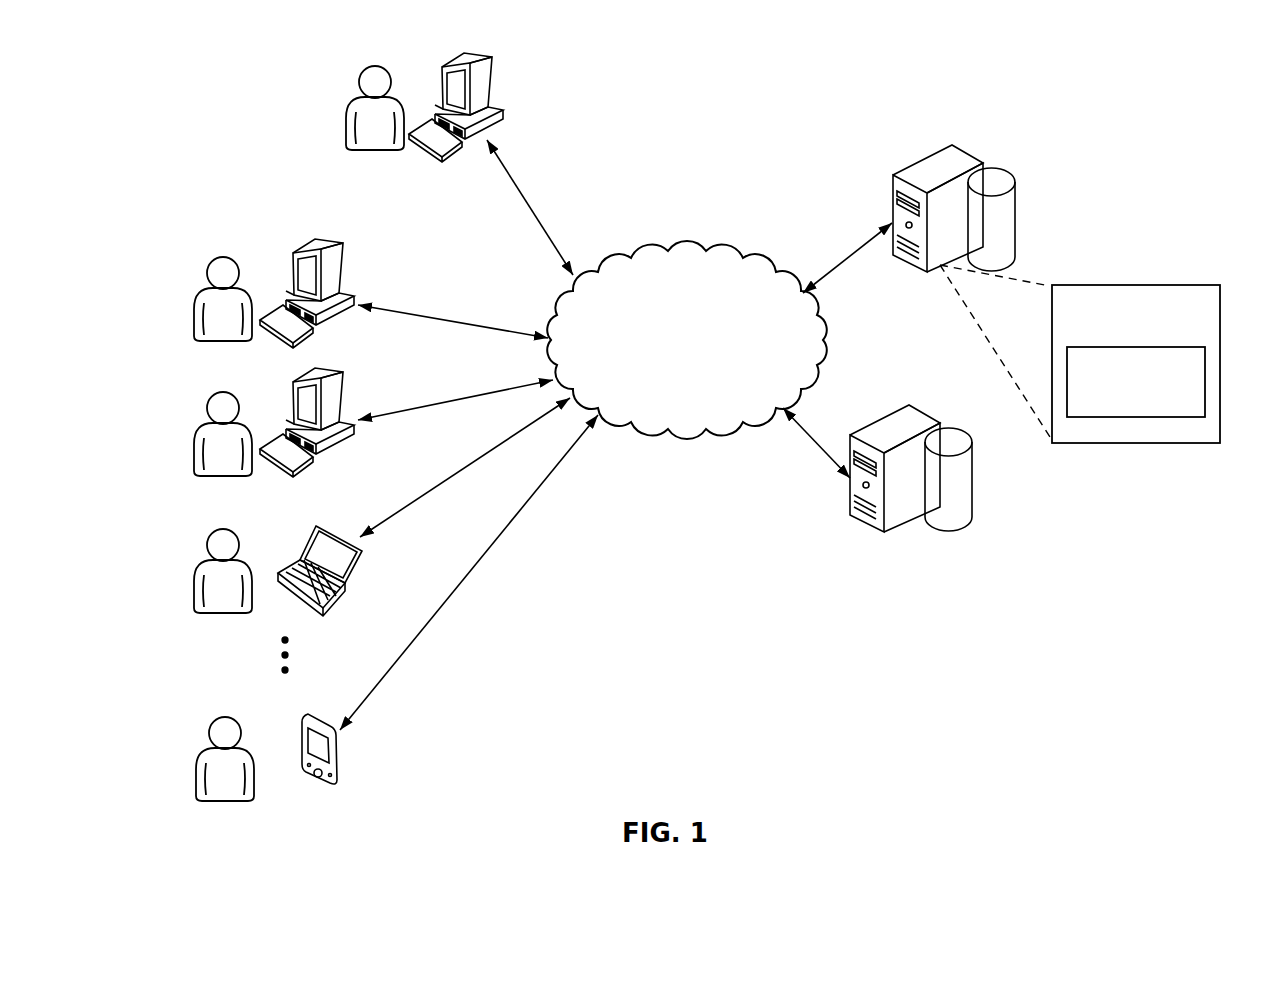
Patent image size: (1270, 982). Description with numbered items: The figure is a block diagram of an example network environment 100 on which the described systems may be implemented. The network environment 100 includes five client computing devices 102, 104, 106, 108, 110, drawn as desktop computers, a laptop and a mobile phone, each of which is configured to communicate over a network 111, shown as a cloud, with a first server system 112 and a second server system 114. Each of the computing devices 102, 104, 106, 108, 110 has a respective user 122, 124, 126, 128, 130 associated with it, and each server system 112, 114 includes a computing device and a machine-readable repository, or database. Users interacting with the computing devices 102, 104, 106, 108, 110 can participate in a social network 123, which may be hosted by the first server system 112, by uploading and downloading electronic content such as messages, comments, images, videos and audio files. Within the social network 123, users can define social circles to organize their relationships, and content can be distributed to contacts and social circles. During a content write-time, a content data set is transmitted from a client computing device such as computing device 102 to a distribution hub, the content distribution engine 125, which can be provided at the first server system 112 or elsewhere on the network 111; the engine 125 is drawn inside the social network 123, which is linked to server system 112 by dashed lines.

The network environment 100 is at (790, 118).
The computing device 102 is at (464, 68).
The computing device 104 is at (316, 254).
The computing device 106 is at (316, 383).
The computing device 108 is at (318, 523).
The computing device 110 is at (300, 720).
The network 111 is at (702, 252).
The first server system 112 is at (900, 282).
The second server system 114 is at (860, 544).
The user 122 is at (350, 100).
The social network 123 is at (1203, 291).
The user 124 is at (230, 258).
The content distribution engine 125 is at (1155, 418).
The user 126 is at (232, 392).
The user 128 is at (234, 530).
The user 130 is at (235, 718).